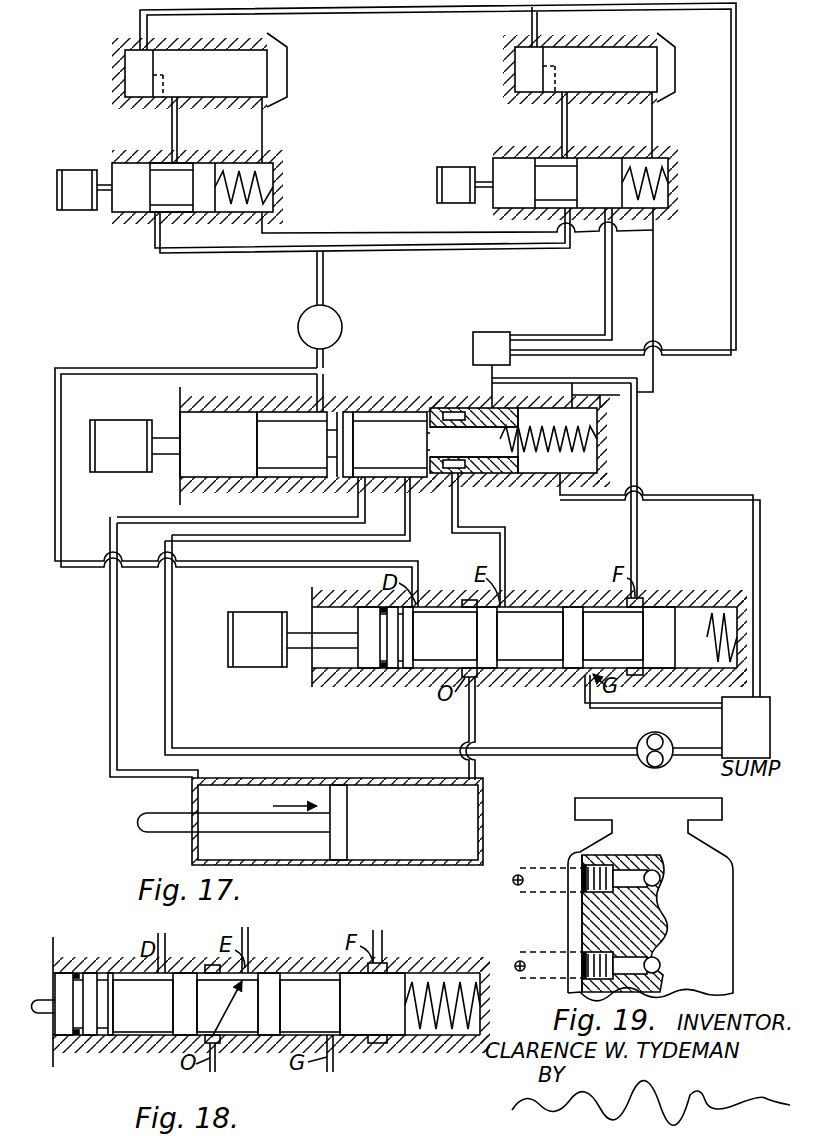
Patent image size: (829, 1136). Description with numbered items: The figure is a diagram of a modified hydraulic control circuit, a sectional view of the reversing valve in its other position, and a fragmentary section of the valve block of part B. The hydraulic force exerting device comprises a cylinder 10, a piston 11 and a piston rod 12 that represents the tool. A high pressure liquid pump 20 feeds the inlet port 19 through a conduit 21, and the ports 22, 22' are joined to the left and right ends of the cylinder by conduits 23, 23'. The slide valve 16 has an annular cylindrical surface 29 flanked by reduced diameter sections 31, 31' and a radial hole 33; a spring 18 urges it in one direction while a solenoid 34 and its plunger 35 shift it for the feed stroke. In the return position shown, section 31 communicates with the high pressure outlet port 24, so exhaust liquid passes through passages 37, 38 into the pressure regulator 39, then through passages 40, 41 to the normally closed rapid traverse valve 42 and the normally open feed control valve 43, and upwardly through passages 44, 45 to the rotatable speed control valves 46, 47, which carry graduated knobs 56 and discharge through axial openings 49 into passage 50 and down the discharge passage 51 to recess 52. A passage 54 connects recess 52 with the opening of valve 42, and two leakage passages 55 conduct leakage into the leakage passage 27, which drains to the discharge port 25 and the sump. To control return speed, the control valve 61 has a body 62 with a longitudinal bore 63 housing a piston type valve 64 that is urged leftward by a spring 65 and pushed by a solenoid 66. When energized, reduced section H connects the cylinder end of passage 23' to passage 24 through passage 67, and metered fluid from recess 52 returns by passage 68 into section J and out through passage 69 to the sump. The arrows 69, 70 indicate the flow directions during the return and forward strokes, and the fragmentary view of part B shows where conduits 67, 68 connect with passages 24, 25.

In FIG. 17, the cylinder 10 is at (420, 862).
In FIG. 17, the piston 11 is at (340, 812).
In FIG. 17, the piston rod 12 is at (245, 828).
In FIG. 17, the cylindrical slide valve 16 is at (310, 446).
In FIG. 17, the spring 18 is at (548, 452).
In FIG. 17, the inlet port 19 is at (408, 477).
In FIG. 17, the high pressure liquid pump 20 is at (643, 760).
In FIG. 17, the conduit 21 is at (165, 686).
In FIG. 17, the port 22 is at (255, 500).
In FIG. 17, the port 22' is at (478, 540).
In FIG. 17, the conduit 23 is at (128, 647).
In FIG. 17, the conduit 23' is at (505, 658).
In FIG. 17, the high pressure outlet port 24 is at (325, 397).
In FIG. 19, the high pressure outlet port 24 is at (660, 879).
In FIG. 17, the discharge port 25 is at (492, 385).
In FIG. 19, the discharge port 25 is at (660, 966).
In FIG. 17, the leakage passage 27 is at (590, 405).
In FIG. 17, the annular cylindrical surface 29 is at (335, 480).
In FIG. 17, the reduced diameter section 31 is at (297, 444).
In FIG. 17, the reduced diameter section 31' is at (385, 444).
In FIG. 17, the radial hole 33 is at (410, 490).
In FIG. 17, the solenoid 34 is at (121, 446).
In FIG. 17, the plunger 35 is at (160, 438).
In FIG. 17, the passage 37 is at (325, 376).
In FIG. 17, the passage 38 is at (330, 357).
In FIG. 17, the pressure regulator 39 is at (304, 313).
In FIG. 17, the passage 40 is at (317, 270).
In FIG. 17, the passage 41 is at (396, 251).
In FIG. 17, the rapid traverse valve 42 is at (557, 183).
In FIG. 17, the feed control valve 43 is at (170, 187).
In FIG. 17, the passage 44 is at (170, 128).
In FIG. 17, the passage 45 is at (562, 118).
In FIG. 17, the speed control valve 46 is at (189, 73).
In FIG. 17, the speed control valve 47 is at (589, 68).
In FIG. 17, the axial opening 49 is at (163, 75).
In FIG. 17, the passage 50 is at (530, 24).
In FIG. 17, the discharge passage 51 is at (738, 85).
In FIG. 17, the recess 52 is at (491, 348).
In FIG. 17, the passage 54 is at (605, 292).
In FIG. 17, the leakage passage 55 is at (262, 128).
In FIG. 17, the knob 56 is at (282, 40).
In FIG. 17, the magnetically operable control valve 61 is at (438, 661).
In FIG. 18, the magnetically operable control valve 61 is at (300, 980).
In FIG. 17, the body 62 is at (545, 602).
In FIG. 17, the longitudinal bore 63 is at (330, 618).
In FIG. 18, the longitudinal bore 63 is at (135, 1036).
In FIG. 17, the piston type valve 64 is at (360, 656).
In FIG. 18, the piston type valve 64 is at (64, 1032).
In FIG. 17, the spring 65 is at (712, 616).
In FIG. 18, the spring 65 is at (453, 1015).
In FIG. 17, the solenoid 66 is at (257, 639).
In FIG. 17, the passage 67 is at (55, 506).
In FIG. 18, the passage 67 is at (165, 946).
In FIG. 19, the passage 67 is at (539, 867).
In FIG. 17, the passage 68 is at (637, 470).
In FIG. 18, the passage 68 is at (383, 936).
In FIG. 19, the passage 68 is at (544, 951).
In FIG. 17, the passage 69 is at (612, 632).
In FIG. 18, the arrow 70 is at (225, 1018).
In FIG. 19, the part B is at (735, 900).